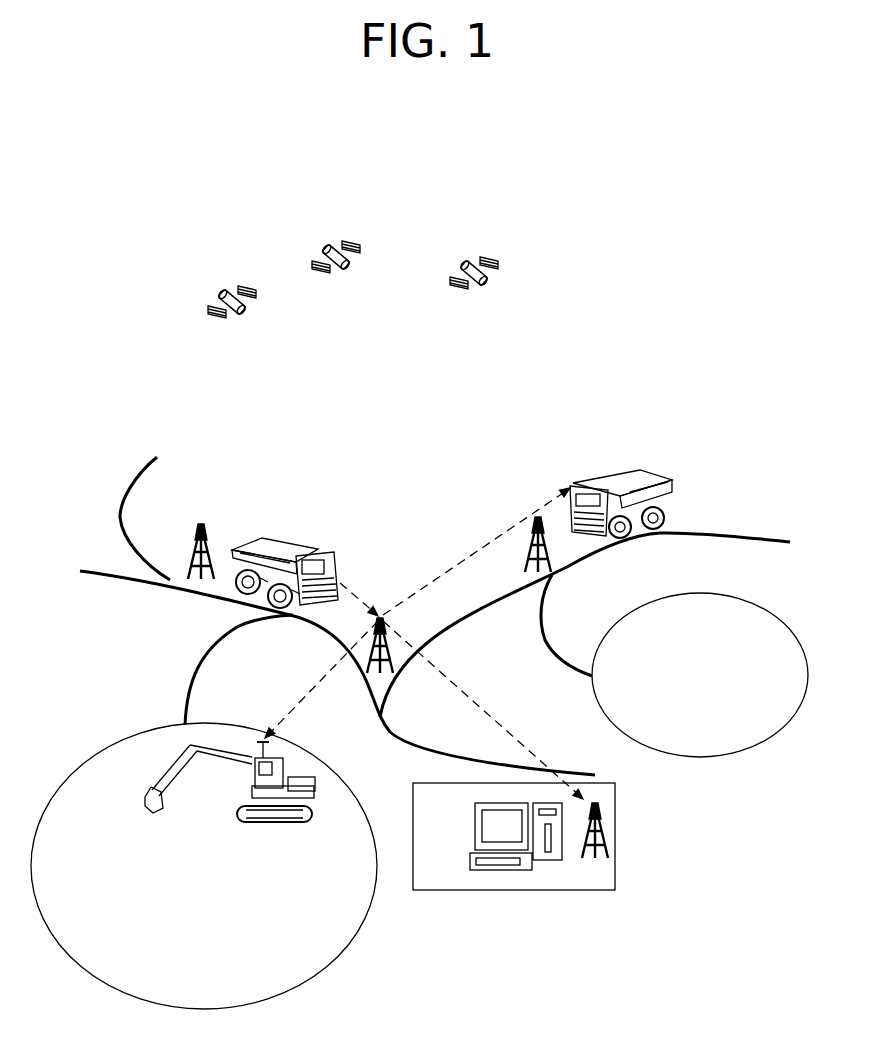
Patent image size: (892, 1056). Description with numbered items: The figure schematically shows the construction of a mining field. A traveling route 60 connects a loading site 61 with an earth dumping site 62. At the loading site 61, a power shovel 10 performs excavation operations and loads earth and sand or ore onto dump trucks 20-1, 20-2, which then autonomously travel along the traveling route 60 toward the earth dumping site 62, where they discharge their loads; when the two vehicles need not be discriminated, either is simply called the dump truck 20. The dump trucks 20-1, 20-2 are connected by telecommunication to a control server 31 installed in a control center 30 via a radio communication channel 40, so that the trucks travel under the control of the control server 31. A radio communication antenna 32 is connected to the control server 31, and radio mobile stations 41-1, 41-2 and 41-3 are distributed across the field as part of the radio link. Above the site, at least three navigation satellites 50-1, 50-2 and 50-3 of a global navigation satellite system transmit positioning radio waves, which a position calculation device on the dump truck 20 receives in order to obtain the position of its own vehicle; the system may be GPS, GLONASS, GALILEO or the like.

The power shovel 10 is at (270, 822).
The dump truck 20 is at (446, 511).
The dump truck 20-1 is at (252, 540).
The dump truck 20-2 is at (595, 480).
The control center 30 is at (552, 861).
The control server 31 is at (537, 860).
The radio communication antenna 32 is at (612, 818).
The radio communication channel 40 is at (512, 733).
The radio mobile station 41-1 is at (384, 617).
The radio mobile station 41-2 is at (198, 523).
The radio mobile station 41-3 is at (535, 522).
The navigation satellite 50-1 is at (228, 283).
The navigation satellite 50-2 is at (333, 243).
The navigation satellite 50-3 is at (474, 255).
The traveling route 60 is at (775, 537).
The loading site 61 is at (209, 868).
The earth dumping site 62 is at (757, 747).